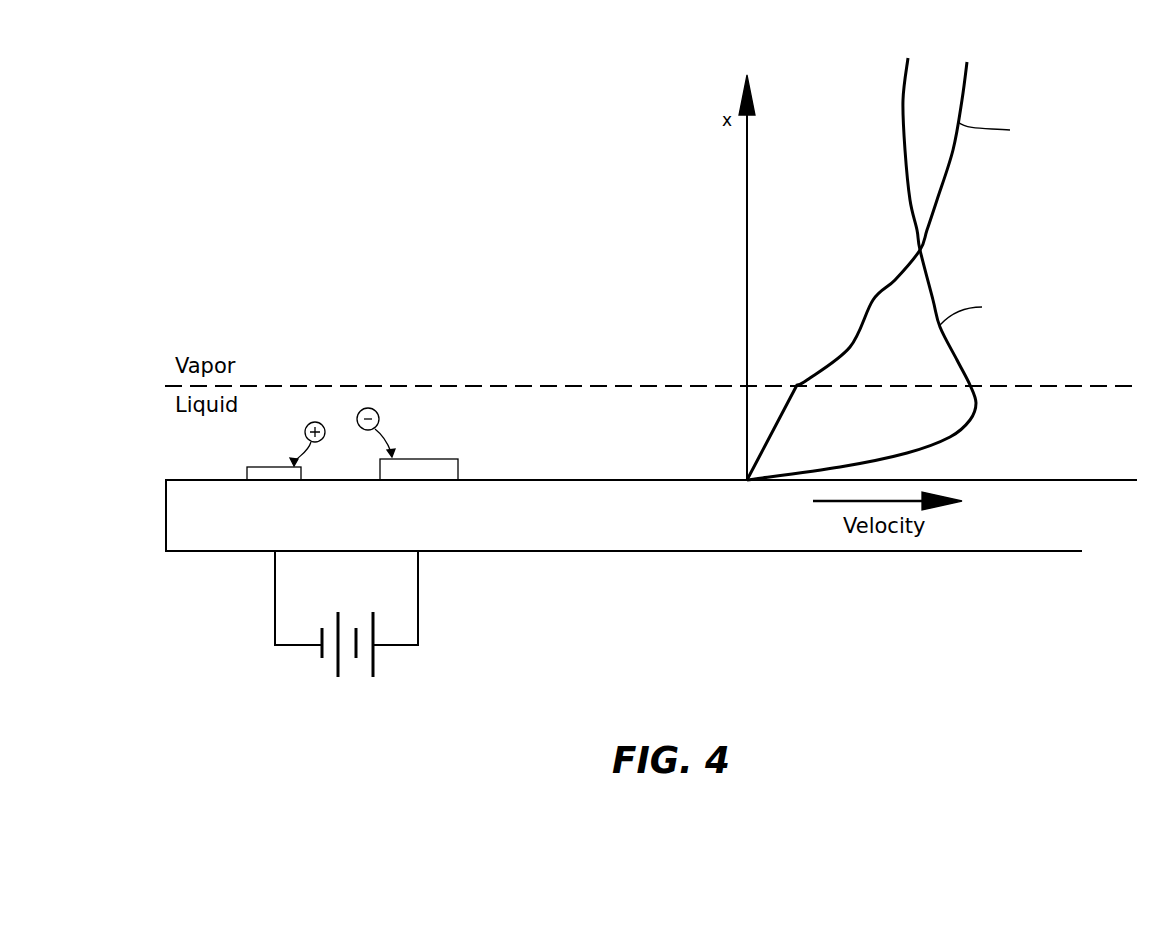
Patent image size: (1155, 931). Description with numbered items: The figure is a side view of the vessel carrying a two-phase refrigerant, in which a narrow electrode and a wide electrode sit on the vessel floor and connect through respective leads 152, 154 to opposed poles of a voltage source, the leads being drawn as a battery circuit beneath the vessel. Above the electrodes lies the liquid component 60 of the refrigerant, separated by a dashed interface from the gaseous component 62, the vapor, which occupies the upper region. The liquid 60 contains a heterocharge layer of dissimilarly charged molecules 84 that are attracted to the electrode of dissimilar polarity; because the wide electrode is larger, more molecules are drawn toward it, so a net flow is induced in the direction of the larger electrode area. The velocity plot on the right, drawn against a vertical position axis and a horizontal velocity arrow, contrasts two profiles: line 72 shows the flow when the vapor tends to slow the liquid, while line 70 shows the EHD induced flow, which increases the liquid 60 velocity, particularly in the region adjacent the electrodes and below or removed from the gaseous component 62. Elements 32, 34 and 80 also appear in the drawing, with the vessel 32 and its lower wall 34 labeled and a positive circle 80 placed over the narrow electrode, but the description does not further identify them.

The channel wall 32 is at (166, 518).
The channel bottom surface 34 is at (587, 480).
The liquid component 60 is at (553, 446).
The gaseous component 62 is at (553, 352).
The EHD induced flow line 70 is at (958, 358).
The vapor-slowed flow line 72 is at (943, 180).
The positive electrode 80 is at (305, 430).
The charged molecules 84 is at (379, 413).
The lead 152 is at (275, 634).
The lead 154 is at (418, 627).